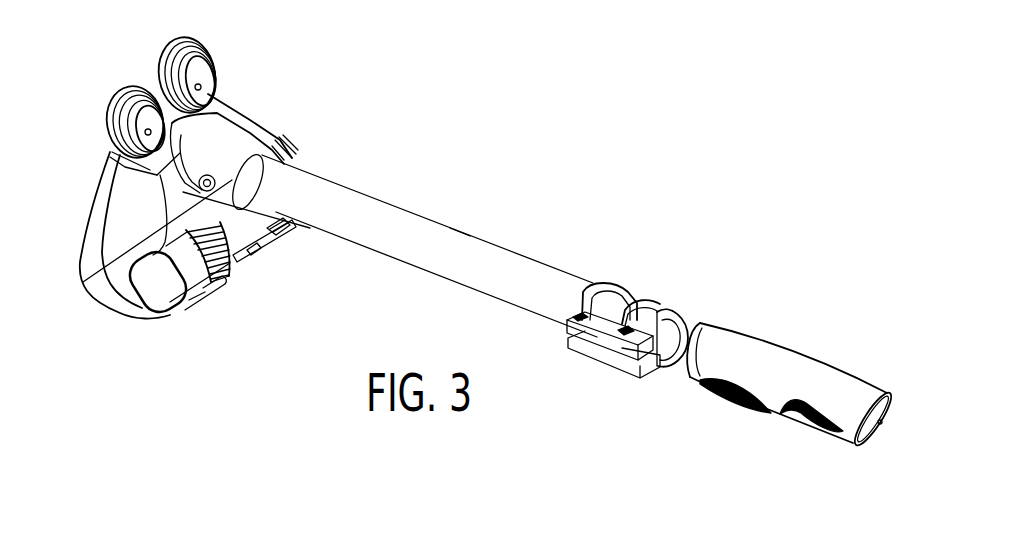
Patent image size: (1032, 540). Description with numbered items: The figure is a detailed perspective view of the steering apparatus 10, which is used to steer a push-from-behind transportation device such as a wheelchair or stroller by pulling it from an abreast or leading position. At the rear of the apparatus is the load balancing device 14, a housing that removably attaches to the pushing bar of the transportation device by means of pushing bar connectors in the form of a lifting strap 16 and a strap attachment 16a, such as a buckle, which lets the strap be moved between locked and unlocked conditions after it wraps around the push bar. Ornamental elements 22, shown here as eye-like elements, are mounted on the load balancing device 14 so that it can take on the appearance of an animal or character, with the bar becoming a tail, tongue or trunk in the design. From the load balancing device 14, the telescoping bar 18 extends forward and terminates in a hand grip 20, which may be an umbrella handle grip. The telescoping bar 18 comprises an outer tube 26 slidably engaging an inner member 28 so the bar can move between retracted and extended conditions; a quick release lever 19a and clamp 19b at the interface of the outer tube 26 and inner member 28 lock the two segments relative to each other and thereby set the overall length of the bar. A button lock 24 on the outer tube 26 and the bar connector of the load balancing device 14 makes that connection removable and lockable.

The steering apparatus 10 is at (830, 320).
The load balancing device 14 is at (108, 185).
The pushing bar connector 16 is at (233, 258).
The strap attachment 16a is at (190, 307).
The telescoping bar 18 is at (392, 200).
The quick release lever 19a is at (605, 350).
The clamp 19b is at (611, 292).
The hand grip 20 is at (752, 373).
The ornamental elements 22 is at (170, 53).
The button lock 24 is at (83, 282).
The outer tube 26 is at (490, 253).
The inner member 28 is at (688, 332).